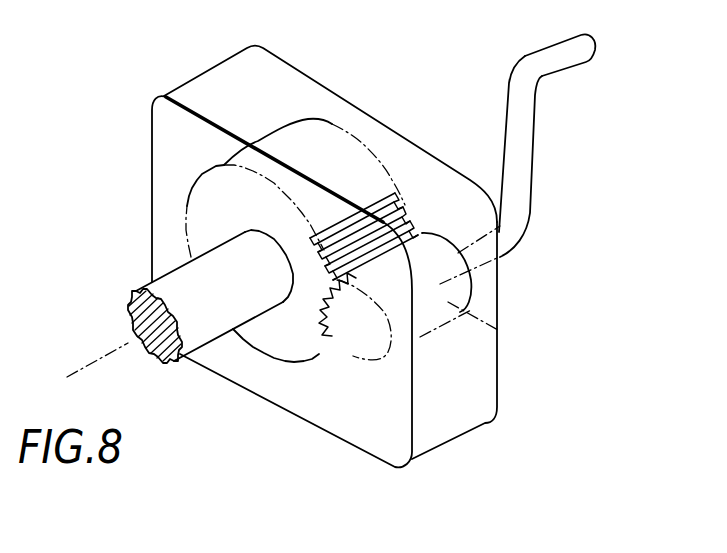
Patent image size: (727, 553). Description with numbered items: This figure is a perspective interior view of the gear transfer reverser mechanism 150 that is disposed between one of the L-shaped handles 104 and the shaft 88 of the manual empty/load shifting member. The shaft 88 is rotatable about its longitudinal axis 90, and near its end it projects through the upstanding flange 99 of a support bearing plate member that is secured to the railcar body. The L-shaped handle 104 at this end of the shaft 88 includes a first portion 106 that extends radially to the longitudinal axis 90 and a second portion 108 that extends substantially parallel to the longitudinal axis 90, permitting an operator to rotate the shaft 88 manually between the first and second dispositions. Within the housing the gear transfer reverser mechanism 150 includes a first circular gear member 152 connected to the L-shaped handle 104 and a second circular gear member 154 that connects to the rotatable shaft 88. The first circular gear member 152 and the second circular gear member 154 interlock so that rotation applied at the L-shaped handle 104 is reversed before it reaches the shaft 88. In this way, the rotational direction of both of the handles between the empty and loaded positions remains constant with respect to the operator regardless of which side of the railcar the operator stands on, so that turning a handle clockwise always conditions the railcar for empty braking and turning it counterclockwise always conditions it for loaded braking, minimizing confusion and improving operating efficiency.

The shaft 88 is at (130, 303).
The longitudinal axis 90 is at (92, 360).
The upstanding flange 99 is at (467, 418).
The L-shaped handle 104 is at (489, 74).
The first portion 106 is at (535, 154).
The second portion 108 is at (562, 41).
The gear transfer reverser mechanism 150 is at (428, 176).
The first circular gear member 152 is at (497, 327).
The second circular gear member 154 is at (200, 205).